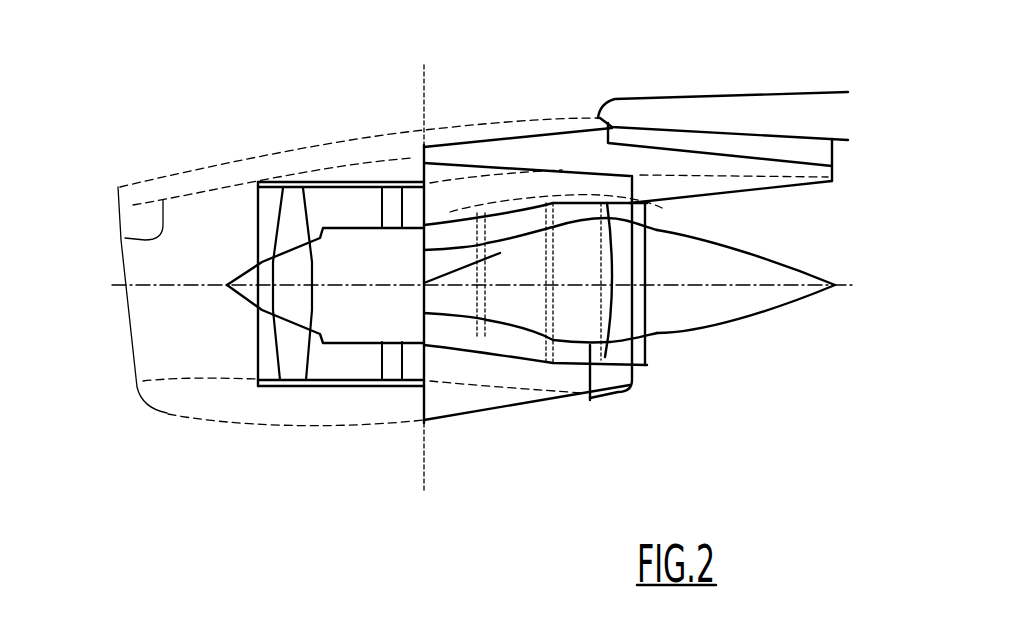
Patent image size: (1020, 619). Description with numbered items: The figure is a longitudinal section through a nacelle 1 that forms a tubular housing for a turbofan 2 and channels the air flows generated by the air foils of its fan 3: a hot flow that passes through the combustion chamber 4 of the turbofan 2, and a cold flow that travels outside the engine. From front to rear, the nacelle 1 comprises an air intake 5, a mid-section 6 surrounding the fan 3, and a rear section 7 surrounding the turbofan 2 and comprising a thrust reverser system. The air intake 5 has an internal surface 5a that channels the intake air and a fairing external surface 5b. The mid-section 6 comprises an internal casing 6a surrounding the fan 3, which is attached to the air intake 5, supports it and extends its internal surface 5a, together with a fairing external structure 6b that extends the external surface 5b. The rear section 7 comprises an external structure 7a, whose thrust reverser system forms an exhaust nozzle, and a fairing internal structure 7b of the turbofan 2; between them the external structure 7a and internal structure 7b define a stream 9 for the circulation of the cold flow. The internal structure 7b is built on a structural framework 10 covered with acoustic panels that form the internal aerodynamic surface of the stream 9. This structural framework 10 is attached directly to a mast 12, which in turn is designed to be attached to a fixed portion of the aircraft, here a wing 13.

The nacelle 1 is at (241, 141).
The turbofan 2 is at (628, 358).
The fan 3 is at (308, 260).
The combustion chamber 4 is at (518, 293).
The air intake 5 is at (188, 176).
The internal surface 5a is at (122, 240).
The fairing external surface 5b is at (180, 417).
The mid-section 6 is at (292, 180).
The internal casing 6a is at (357, 389).
The fairing external structure 6b is at (330, 428).
The rear section 7 is at (472, 394).
The external structure 7a is at (565, 400).
The fairing internal structure 7b is at (593, 393).
The stream 9 is at (503, 188).
The structural framework 10 is at (560, 268).
The mast 12 is at (638, 170).
The wing 13 is at (733, 120).